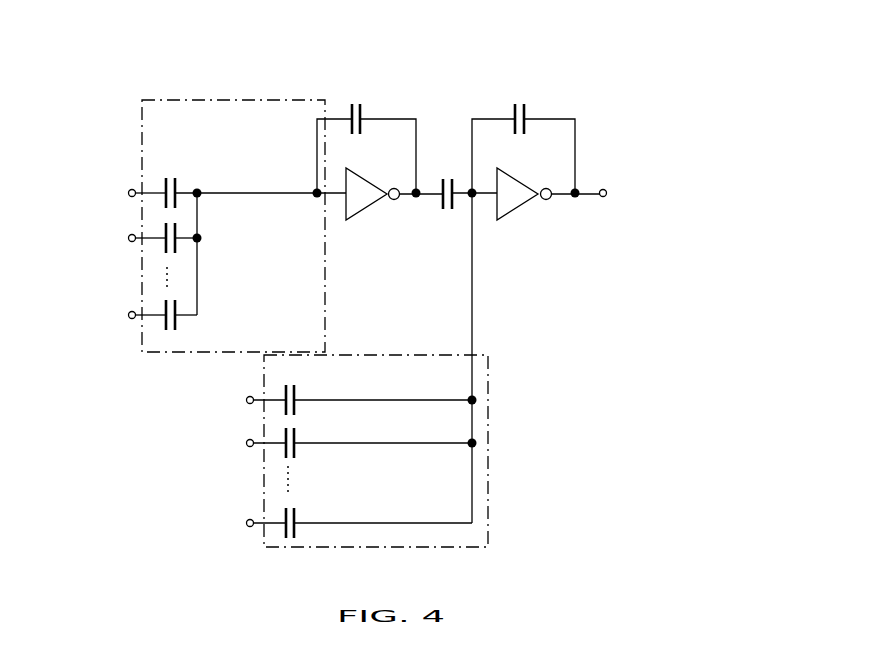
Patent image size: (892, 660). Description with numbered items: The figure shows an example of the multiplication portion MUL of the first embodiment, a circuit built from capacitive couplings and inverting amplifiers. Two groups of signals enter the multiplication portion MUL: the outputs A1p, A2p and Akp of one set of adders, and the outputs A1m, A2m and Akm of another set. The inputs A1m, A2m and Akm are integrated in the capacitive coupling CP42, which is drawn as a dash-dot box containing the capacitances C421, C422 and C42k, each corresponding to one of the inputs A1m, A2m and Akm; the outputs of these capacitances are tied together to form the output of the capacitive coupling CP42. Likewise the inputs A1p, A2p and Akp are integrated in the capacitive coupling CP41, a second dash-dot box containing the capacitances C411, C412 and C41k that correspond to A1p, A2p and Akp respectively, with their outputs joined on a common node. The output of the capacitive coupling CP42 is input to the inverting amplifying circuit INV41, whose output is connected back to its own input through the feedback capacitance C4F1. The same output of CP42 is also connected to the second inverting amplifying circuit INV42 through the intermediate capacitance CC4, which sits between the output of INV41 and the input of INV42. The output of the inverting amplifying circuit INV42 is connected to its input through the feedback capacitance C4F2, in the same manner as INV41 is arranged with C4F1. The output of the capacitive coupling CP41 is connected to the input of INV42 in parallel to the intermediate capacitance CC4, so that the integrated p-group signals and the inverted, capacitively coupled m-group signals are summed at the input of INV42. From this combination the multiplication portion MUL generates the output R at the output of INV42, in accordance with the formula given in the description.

The capacitive coupling CP42 is at (140, 130).
The capacitance C421 is at (203, 149).
The capacitance C422 is at (178, 250).
The capacitance C42k is at (178, 322).
The feedback capacitance C4F1 is at (366, 131).
The feedback capacitance C4F2 is at (523, 131).
The intermediate capacitance CC4 is at (443, 180).
The inverting amplifying circuit INV41 is at (395, 205).
The inverting amplifying circuit INV42 is at (547, 208).
The capacitive coupling CP41 is at (489, 402).
The capacitance C411 is at (330, 393).
The capacitance C412 is at (332, 438).
The capacitance C41k is at (333, 517).
The multiplication portion MUL is at (627, 113).
The output R is at (602, 184).
The output of ADD1m A1m is at (109, 184).
The output of ADD2m A2m is at (109, 239).
The output of ADDkm Akm is at (109, 309).
The output of ADD1p A1p is at (229, 393).
The output of ADD2p A2p is at (229, 441).
The output of ADDkp Akp is at (228, 524).